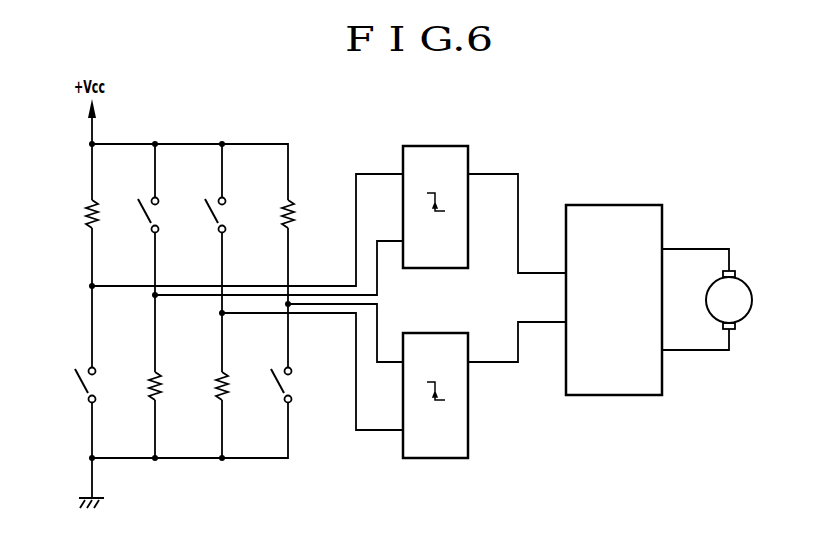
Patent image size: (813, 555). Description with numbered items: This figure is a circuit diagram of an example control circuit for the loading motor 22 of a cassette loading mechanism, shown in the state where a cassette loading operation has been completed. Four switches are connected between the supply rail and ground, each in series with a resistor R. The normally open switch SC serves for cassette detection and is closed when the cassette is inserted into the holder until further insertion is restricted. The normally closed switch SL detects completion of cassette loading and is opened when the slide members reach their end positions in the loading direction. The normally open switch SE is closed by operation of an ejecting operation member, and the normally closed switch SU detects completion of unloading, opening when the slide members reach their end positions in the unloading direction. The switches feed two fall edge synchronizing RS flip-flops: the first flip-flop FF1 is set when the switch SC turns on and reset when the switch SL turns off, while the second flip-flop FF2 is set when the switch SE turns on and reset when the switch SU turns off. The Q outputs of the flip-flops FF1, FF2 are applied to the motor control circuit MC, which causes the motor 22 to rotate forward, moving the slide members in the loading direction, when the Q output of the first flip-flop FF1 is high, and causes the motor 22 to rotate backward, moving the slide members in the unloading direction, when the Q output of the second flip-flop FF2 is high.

The loading motor 22 is at (752, 300).
The motor control circuit MC is at (625, 205).
The first RS flip-flop FF1 is at (440, 146).
The second RS flip-flop FF2 is at (440, 333).
The normally closed type switch SL is at (159, 213).
The normally closed type switch SU is at (226, 213).
The normally open type switch SC is at (96, 383).
The normally open type switch SE is at (293, 381).
The resistor R is at (99, 213).